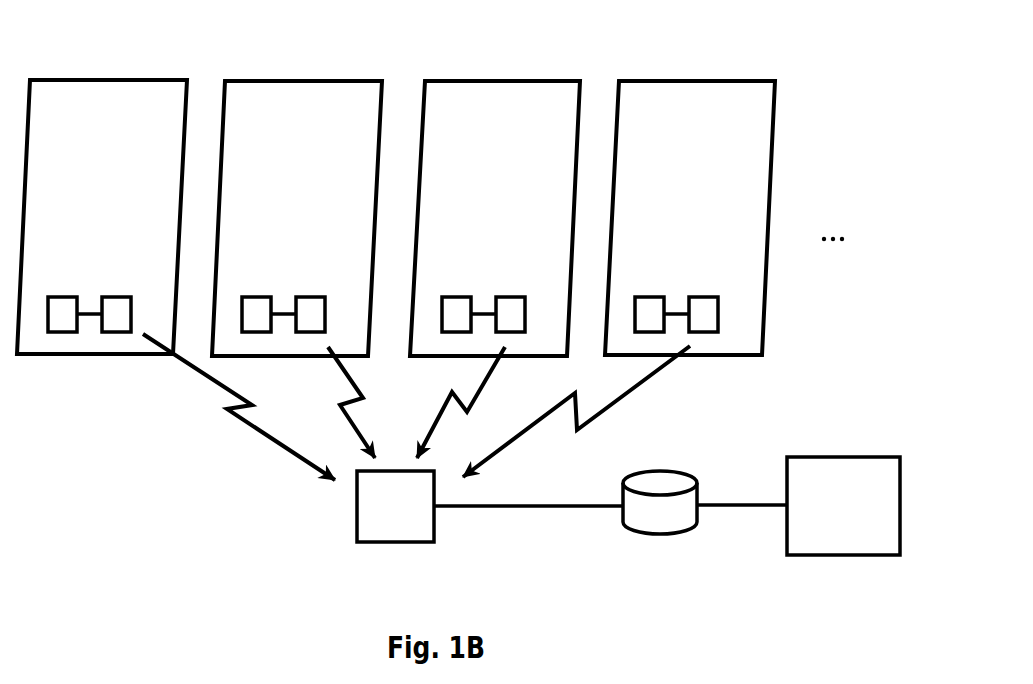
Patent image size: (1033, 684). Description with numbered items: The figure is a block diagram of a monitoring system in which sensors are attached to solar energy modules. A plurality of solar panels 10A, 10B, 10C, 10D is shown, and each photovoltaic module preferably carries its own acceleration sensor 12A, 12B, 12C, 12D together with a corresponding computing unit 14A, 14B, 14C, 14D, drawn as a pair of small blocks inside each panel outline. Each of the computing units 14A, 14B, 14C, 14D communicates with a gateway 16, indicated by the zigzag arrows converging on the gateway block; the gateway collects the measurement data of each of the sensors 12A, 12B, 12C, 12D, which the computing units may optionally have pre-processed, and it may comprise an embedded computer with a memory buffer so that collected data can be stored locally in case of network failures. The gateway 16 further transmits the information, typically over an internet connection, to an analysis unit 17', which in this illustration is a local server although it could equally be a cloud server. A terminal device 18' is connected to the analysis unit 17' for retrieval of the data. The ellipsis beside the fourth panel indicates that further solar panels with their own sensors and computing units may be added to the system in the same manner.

The solar panel 10A is at (107, 80).
The solar panel 10B is at (302, 81).
The solar panel 10C is at (502, 81).
The solar panel 10D is at (677, 81).
The acceleration sensor 12A is at (63, 297).
The acceleration sensor 12B is at (258, 297).
The acceleration sensor 12C is at (458, 297).
The acceleration sensor 12D is at (652, 297).
The computing unit 14A is at (116, 333).
The computing unit 14B is at (311, 333).
The computing unit 14C is at (507, 333).
The computing unit 14D is at (703, 333).
The gateway 16 is at (395, 544).
The analysis unit 17' is at (659, 539).
The terminal device 18' is at (832, 532).